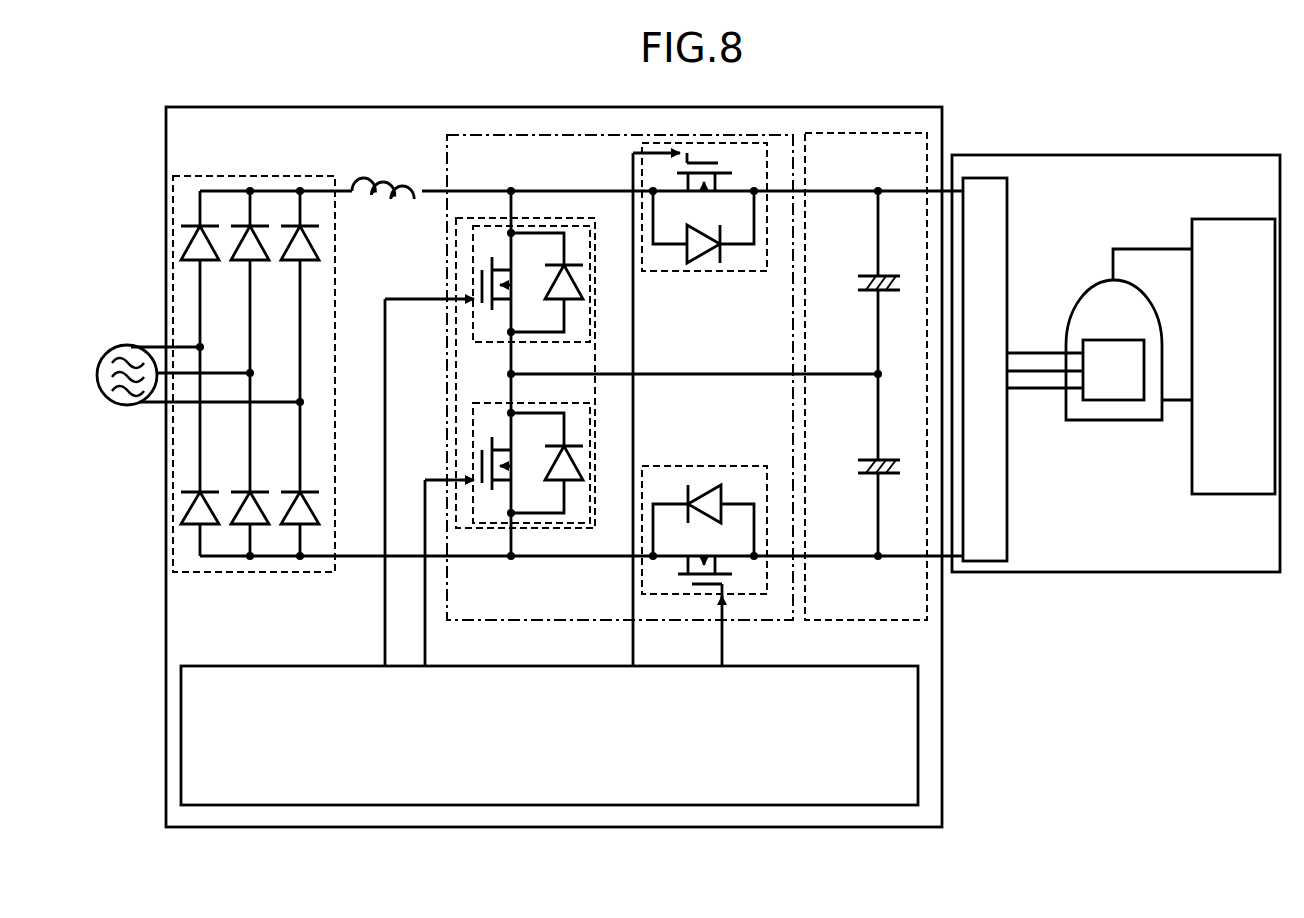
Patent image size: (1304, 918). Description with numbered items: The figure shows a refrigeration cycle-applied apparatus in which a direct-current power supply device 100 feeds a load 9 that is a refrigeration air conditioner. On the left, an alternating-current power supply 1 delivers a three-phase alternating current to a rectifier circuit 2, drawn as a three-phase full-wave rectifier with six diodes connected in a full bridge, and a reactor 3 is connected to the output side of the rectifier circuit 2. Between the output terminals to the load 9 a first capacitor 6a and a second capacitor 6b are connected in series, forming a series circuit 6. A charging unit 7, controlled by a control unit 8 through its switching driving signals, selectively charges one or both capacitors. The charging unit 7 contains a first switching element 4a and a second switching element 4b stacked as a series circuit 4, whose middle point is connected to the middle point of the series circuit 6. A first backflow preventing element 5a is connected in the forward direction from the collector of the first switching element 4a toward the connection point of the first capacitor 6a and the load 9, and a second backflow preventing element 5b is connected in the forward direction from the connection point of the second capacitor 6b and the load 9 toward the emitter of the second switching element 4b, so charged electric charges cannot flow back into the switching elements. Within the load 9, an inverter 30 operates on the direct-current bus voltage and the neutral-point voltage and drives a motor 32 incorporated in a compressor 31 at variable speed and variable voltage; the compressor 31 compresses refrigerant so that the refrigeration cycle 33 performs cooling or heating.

The alternating-current power supply 1 is at (128, 345).
The rectifier circuit 2 is at (256, 175).
The reactor 3 is at (385, 177).
The series circuit 4 is at (546, 216).
The first switching element 4a is at (471, 276).
The second switching element 4b is at (471, 456).
The first backflow preventing element 5a is at (705, 273).
The second backflow preventing element 5b is at (705, 465).
The series circuit 6 is at (828, 133).
The first capacitor 6a is at (862, 275).
The second capacitor 6b is at (862, 459).
The charging unit 7 is at (501, 136).
The control unit 8 is at (855, 667).
The load 9 is at (1221, 156).
The inverter 30 is at (1007, 194).
The compressor 31 is at (1142, 422).
The motor 32 is at (1098, 341).
The refrigeration cycle 33 is at (1219, 222).
The direct-current power supply device 100 is at (905, 93).